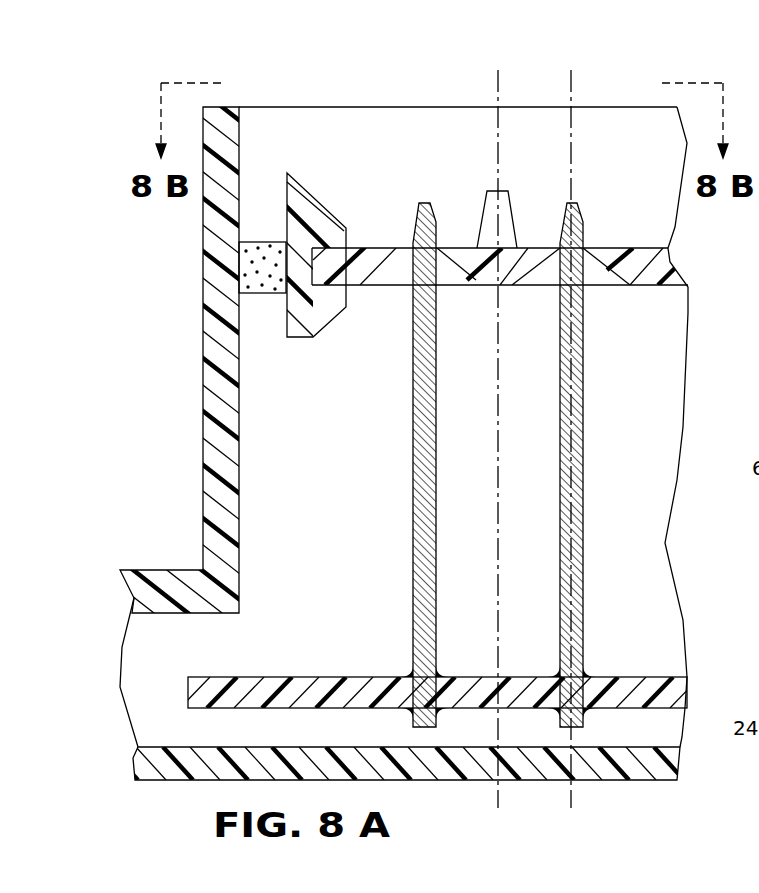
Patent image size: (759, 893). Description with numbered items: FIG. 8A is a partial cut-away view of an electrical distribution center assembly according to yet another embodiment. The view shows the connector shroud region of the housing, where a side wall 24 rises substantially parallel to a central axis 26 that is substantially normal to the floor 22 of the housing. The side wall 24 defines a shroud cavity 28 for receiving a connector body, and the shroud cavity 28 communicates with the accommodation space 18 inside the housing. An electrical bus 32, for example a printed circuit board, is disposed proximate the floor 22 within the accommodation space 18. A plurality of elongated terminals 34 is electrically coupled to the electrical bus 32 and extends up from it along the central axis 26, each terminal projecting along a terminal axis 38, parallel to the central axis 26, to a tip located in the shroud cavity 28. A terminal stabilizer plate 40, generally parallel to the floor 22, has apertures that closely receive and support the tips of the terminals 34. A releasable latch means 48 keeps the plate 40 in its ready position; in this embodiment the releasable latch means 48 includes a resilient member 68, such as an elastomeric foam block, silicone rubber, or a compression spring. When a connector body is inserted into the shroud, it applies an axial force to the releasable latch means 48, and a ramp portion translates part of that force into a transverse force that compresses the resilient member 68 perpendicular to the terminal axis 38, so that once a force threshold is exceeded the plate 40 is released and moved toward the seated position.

The accommodation space 18 is at (207, 643).
The floor 22 is at (183, 778).
The side wall 24 is at (208, 268).
The central axis 26 is at (497, 787).
The shroud cavity 28 is at (533, 132).
The electrical bus 32 is at (188, 688).
The terminals 34 is at (560, 487).
The terminal axis 38 is at (571, 787).
The terminal stabilizer plate 40 is at (642, 253).
The releasable latch means 48 is at (317, 220).
The resilient member 68 is at (256, 247).